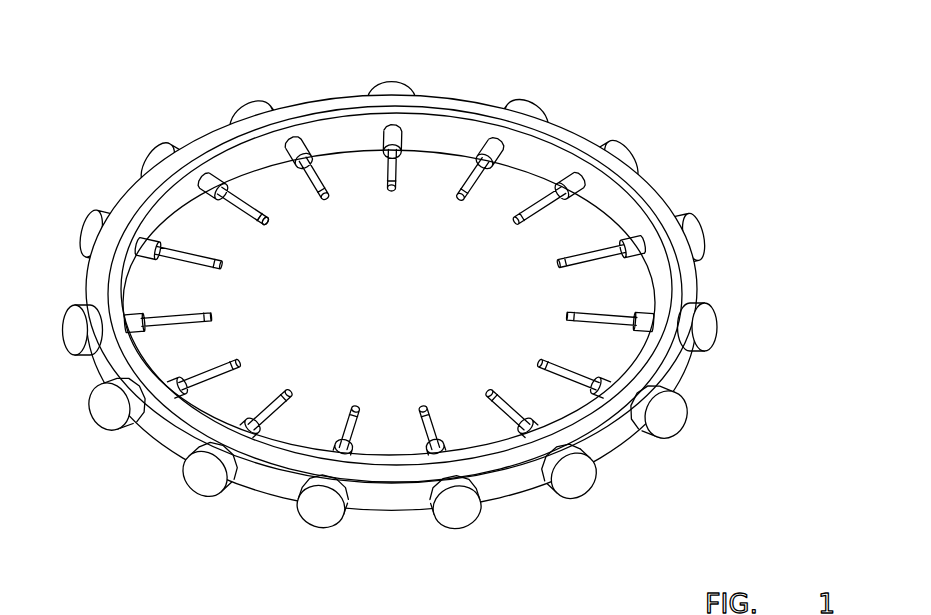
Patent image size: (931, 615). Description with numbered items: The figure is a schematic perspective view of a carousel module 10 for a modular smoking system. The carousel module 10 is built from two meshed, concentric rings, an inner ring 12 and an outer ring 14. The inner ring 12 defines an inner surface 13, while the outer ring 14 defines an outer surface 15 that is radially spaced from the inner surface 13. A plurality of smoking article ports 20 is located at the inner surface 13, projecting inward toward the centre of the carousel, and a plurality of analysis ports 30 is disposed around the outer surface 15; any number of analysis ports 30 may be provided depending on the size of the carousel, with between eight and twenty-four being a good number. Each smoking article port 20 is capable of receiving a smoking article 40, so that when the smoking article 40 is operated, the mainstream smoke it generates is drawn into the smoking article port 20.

The carousel module 10 is at (455, 280).
The inner ring 12 is at (543, 160).
The inner surface 13 is at (625, 212).
The outer ring 14 is at (583, 147).
The outer surface 15 is at (613, 437).
The smoking article ports 20 is at (208, 175).
The analysis ports 30 is at (714, 333).
The smoking article 40 is at (245, 227).